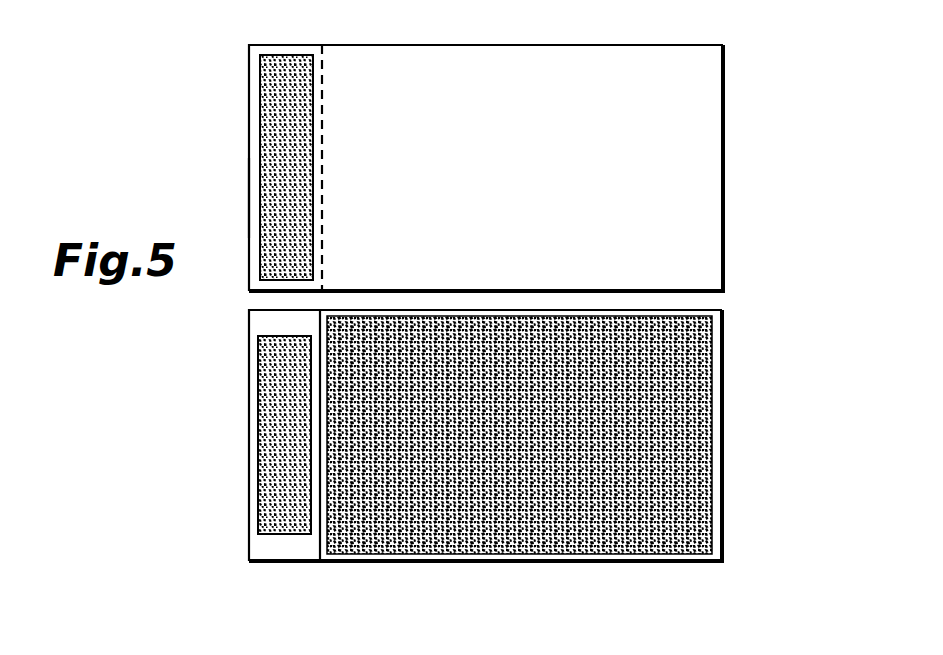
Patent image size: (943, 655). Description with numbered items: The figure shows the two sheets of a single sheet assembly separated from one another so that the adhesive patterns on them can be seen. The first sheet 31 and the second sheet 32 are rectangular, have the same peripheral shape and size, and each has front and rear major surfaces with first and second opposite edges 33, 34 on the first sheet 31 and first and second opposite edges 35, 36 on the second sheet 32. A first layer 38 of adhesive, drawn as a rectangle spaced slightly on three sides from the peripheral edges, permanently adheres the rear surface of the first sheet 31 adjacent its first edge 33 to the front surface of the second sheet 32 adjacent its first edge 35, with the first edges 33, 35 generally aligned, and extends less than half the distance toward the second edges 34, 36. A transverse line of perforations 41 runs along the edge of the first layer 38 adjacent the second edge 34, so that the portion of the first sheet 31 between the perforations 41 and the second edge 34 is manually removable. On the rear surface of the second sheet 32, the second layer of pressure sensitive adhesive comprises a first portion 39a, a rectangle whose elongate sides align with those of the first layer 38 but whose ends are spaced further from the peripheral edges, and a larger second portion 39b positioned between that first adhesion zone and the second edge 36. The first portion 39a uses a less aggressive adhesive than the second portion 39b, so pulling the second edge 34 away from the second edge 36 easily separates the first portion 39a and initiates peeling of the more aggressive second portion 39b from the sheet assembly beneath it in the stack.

The first sheet 31 is at (716, 108).
The second sheet 32 is at (716, 380).
The first edge of first sheet 33 is at (240, 190).
The second edge of first sheet 34 is at (718, 208).
The first edge of second sheet 35 is at (240, 358).
The second edge of second sheet 36 is at (716, 440).
The first layer of adhesive 38 is at (256, 146).
The first portion of second layer of pressure sensitive adhesive 39a is at (248, 438).
The second portion of second layer of pressure sensitive adhesive 39b is at (549, 537).
The line of perforations 41 is at (318, 162).